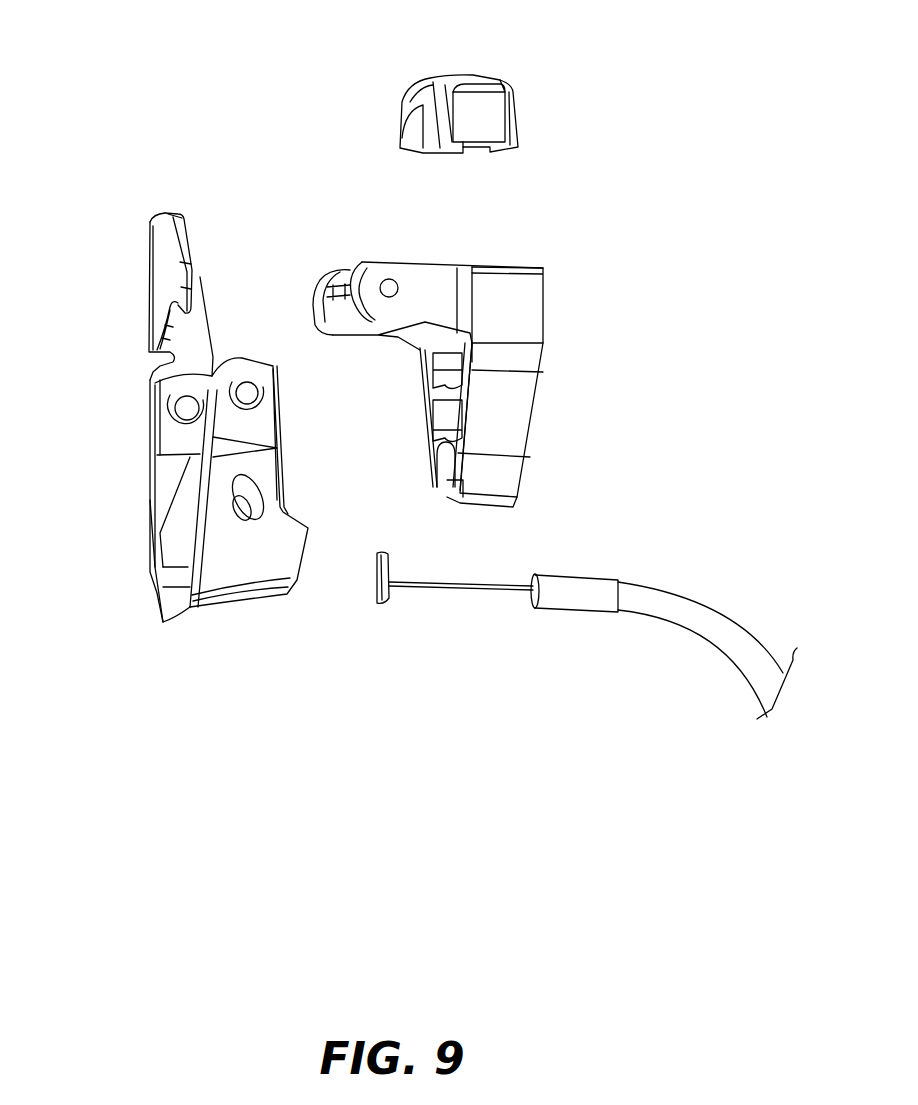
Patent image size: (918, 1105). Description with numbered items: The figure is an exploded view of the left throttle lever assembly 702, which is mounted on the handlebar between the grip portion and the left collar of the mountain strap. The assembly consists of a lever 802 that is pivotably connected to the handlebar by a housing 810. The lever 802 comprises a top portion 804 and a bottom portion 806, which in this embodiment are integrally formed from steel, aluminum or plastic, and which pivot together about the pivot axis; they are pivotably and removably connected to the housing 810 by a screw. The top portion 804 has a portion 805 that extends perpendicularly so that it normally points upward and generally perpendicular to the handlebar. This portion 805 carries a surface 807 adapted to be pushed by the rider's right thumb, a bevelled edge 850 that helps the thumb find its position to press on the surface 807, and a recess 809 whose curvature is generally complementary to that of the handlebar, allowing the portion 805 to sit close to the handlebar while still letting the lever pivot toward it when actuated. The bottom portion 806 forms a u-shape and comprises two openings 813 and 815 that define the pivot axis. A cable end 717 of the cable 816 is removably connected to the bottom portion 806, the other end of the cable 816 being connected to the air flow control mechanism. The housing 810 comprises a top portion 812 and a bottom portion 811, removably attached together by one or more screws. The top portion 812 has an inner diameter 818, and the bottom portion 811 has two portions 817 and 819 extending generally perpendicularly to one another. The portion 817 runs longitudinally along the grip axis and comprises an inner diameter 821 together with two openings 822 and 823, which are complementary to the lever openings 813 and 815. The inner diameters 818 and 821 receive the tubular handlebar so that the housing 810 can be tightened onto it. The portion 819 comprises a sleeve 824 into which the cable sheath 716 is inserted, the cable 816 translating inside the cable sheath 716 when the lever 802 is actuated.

The left throttle lever assembly 702 is at (266, 106).
The cable sheath 716 is at (653, 610).
The cable end 717 is at (375, 598).
The lever 802 is at (200, 277).
The top portion 804 is at (147, 262).
The portion 805 is at (150, 222).
The bottom portion 806 is at (153, 530).
The surface 807 is at (160, 237).
The recess 809 is at (157, 308).
The housing 810 is at (558, 203).
The bottom portion 811 is at (543, 358).
The top portion 812 is at (503, 83).
The opening 813 is at (183, 408).
The opening 815 is at (247, 393).
The cable 816 is at (447, 588).
The portion 817 is at (447, 292).
The inner diameter 818 is at (413, 120).
The portion 819 is at (512, 422).
The inner diameter 821 is at (350, 270).
The opening 822 is at (335, 292).
The opening 823 is at (392, 290).
The sleeve 824 is at (483, 503).
The bevelled edge 850 is at (178, 225).